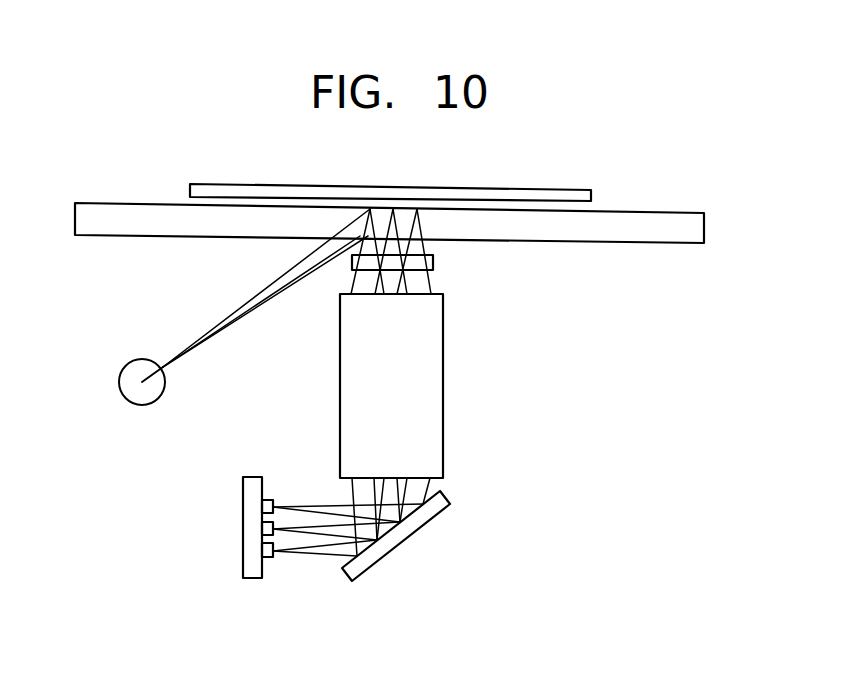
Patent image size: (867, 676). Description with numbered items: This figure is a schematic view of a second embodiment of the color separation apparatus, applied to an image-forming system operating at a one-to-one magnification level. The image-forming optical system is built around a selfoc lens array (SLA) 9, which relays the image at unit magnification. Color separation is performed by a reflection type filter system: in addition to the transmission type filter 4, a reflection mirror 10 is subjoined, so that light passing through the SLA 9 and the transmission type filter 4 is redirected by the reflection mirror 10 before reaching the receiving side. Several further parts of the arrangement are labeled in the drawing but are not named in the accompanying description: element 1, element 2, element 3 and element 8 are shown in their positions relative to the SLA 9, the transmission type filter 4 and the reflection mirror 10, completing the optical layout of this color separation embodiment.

The light source 1 is at (136, 393).
The substrate (object to be inspected) 2 is at (657, 232).
The plate 3 is at (590, 190).
The transmission type filter 4 is at (433, 262).
The photodetector array 8 is at (254, 575).
The SLA (selfoc lens array) 9 is at (443, 381).
The reflection mirror 10 is at (420, 520).